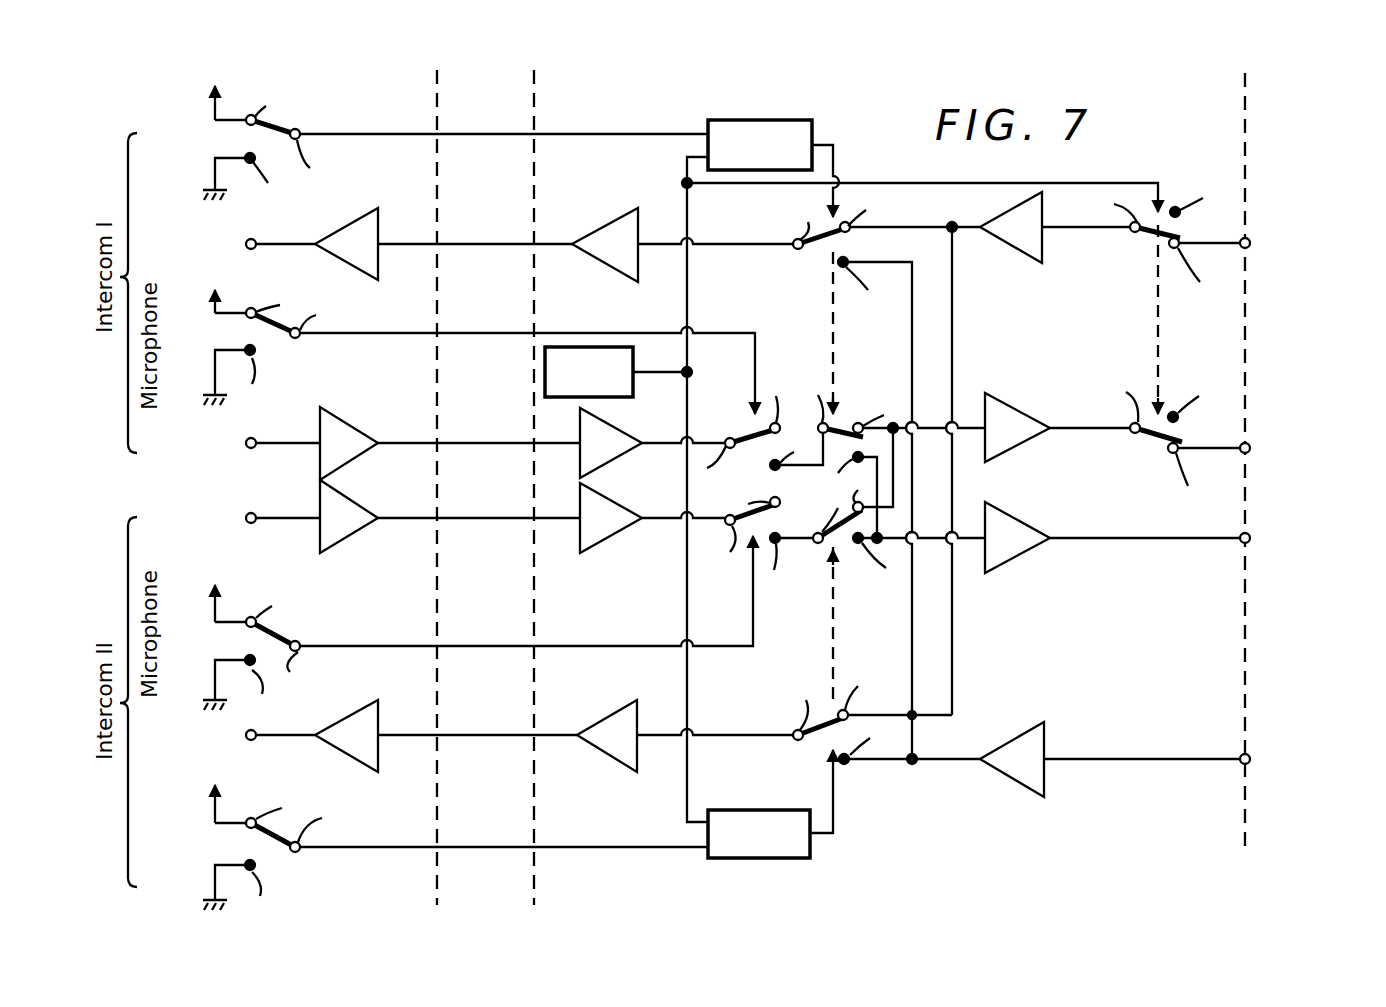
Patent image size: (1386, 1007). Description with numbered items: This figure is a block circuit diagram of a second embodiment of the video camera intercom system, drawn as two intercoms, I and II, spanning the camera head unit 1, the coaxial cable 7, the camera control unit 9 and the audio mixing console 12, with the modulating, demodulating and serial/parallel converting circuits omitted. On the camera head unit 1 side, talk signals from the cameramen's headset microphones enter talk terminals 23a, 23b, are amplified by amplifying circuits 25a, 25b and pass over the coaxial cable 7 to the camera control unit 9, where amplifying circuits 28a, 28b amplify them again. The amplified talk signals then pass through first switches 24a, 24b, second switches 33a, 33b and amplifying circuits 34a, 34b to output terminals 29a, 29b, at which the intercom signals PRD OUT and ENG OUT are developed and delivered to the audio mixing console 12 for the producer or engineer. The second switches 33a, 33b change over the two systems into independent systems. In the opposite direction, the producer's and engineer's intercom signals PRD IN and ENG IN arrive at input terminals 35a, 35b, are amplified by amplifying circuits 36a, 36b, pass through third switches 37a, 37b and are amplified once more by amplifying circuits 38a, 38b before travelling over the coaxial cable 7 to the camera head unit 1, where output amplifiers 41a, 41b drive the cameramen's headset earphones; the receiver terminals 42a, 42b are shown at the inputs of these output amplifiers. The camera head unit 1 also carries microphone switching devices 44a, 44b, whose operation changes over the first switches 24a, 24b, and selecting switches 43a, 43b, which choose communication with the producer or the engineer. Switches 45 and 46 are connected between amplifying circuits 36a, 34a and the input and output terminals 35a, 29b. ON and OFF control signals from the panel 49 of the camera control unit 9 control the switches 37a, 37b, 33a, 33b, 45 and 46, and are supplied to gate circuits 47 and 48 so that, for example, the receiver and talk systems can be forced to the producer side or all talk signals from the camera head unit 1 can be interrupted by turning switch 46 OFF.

The camera head unit 1 is at (400, 119).
The coaxial cable 7 is at (492, 119).
The camera control unit 9 is at (703, 119).
The audio mixing console 12 is at (1310, 119).
The talk terminal 23a is at (255, 449).
The talk terminal 23b is at (255, 524).
The first switch 24a is at (766, 440).
The first switch 24b is at (770, 514).
The amplifying circuit 25a is at (352, 462).
The amplifying circuit 25b is at (352, 537).
The amplifying circuit 28a is at (620, 460).
The amplifying circuit 28b is at (620, 537).
The output terminal 29a is at (1247, 454).
The output terminal 29b is at (1247, 544).
The second switch 33a is at (847, 430).
The second switch 33b is at (840, 540).
The amplifying circuit 34a is at (1018, 412).
The amplifying circuit 34b is at (1022, 560).
The input terminal 35a is at (1247, 249).
The input terminal 35b is at (1247, 765).
The amplifying circuit 36a is at (1010, 248).
The amplifying circuit 36b is at (1022, 730).
The third switch 37a is at (818, 250).
The third switch 37b is at (820, 740).
The amplifying circuit 38a is at (603, 228).
The amplifying circuit 38b is at (607, 762).
The output amplifier 41a is at (357, 222).
The output amplifier 41b is at (352, 715).
The receiver terminal 42a is at (253, 249).
The receiver terminal 42b is at (253, 740).
The selecting switch 43a is at (290, 128).
The selecting switch 43b is at (297, 852).
The microphone switching device 44a is at (290, 345).
The microphone switching device 44b is at (297, 640).
The switch 45 is at (1158, 238).
The switch 46 is at (1150, 440).
The gate circuit 47 is at (812, 124).
The gate circuit 48 is at (810, 846).
The panel 49 is at (633, 388).